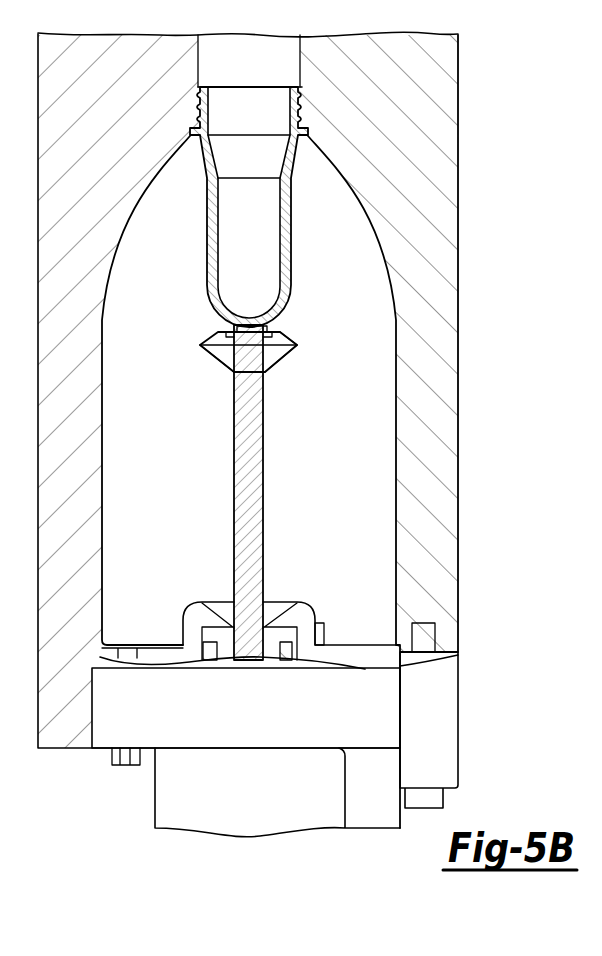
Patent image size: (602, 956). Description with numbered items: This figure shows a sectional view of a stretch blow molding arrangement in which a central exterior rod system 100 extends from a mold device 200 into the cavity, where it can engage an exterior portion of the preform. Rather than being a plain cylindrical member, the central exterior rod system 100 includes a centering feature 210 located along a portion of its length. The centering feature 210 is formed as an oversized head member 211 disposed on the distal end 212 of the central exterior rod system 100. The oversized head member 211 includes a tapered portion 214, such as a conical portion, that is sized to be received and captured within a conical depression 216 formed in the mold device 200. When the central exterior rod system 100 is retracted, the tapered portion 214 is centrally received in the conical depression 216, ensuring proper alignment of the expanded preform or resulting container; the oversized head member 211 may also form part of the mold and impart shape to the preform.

The central exterior rod system 100 is at (265, 456).
The mold device 200 is at (186, 572).
The centering feature 210 is at (226, 343).
The oversized head member 211 is at (200, 350).
The distal end 212 is at (272, 357).
The tapered portion 214 is at (216, 363).
The conical depression 216 is at (278, 605).